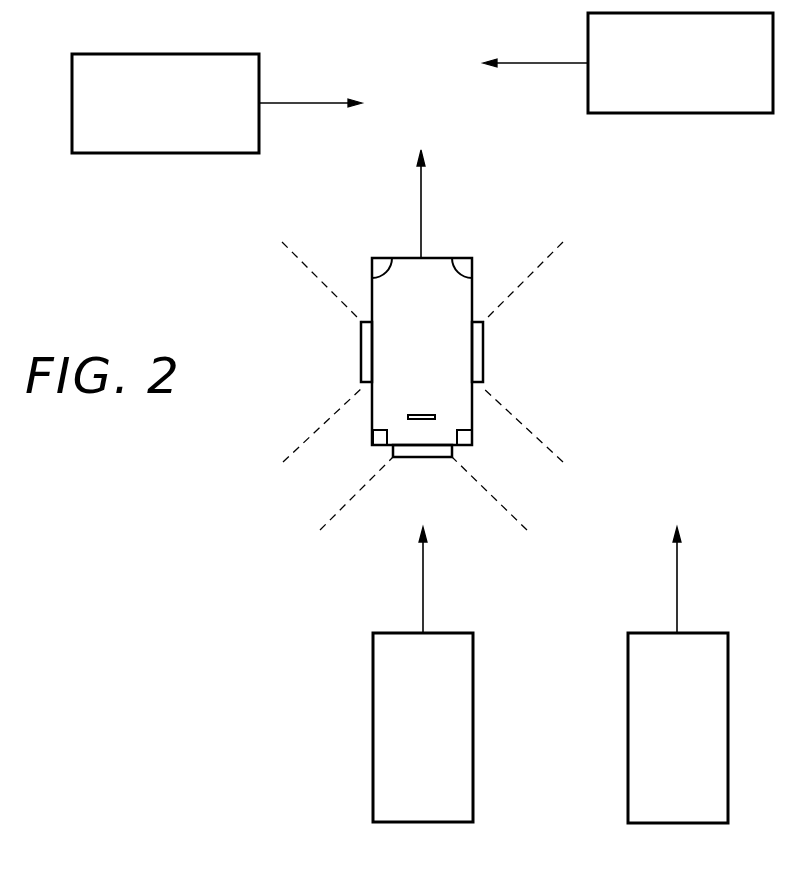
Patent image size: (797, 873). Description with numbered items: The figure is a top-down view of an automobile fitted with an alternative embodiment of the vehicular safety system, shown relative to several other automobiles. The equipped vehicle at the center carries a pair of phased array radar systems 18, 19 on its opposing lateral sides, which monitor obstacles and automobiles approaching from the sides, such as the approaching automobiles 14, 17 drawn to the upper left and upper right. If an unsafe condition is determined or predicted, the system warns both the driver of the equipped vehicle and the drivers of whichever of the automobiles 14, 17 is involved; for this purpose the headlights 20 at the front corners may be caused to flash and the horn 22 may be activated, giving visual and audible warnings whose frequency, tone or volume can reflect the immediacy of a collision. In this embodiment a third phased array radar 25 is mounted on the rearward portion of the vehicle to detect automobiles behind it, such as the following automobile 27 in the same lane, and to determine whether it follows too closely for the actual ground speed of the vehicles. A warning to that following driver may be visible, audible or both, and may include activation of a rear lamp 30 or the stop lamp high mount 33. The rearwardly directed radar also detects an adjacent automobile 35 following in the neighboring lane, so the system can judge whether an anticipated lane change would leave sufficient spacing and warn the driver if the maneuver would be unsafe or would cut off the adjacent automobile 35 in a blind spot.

The approaching automobile 14 is at (638, 113).
The approaching automobile 17 is at (122, 153).
The phased array radar system 18 is at (483, 360).
The phased array radar system 19 is at (362, 352).
The headlights 20 is at (382, 255).
The horn 22 is at (400, 280).
The third phased array radar 25 is at (428, 458).
The following automobile 27 is at (373, 697).
The rear lamp 30 is at (370, 423).
The stop lamp high mount 33 is at (422, 410).
The adjacent automobile 35 is at (628, 697).